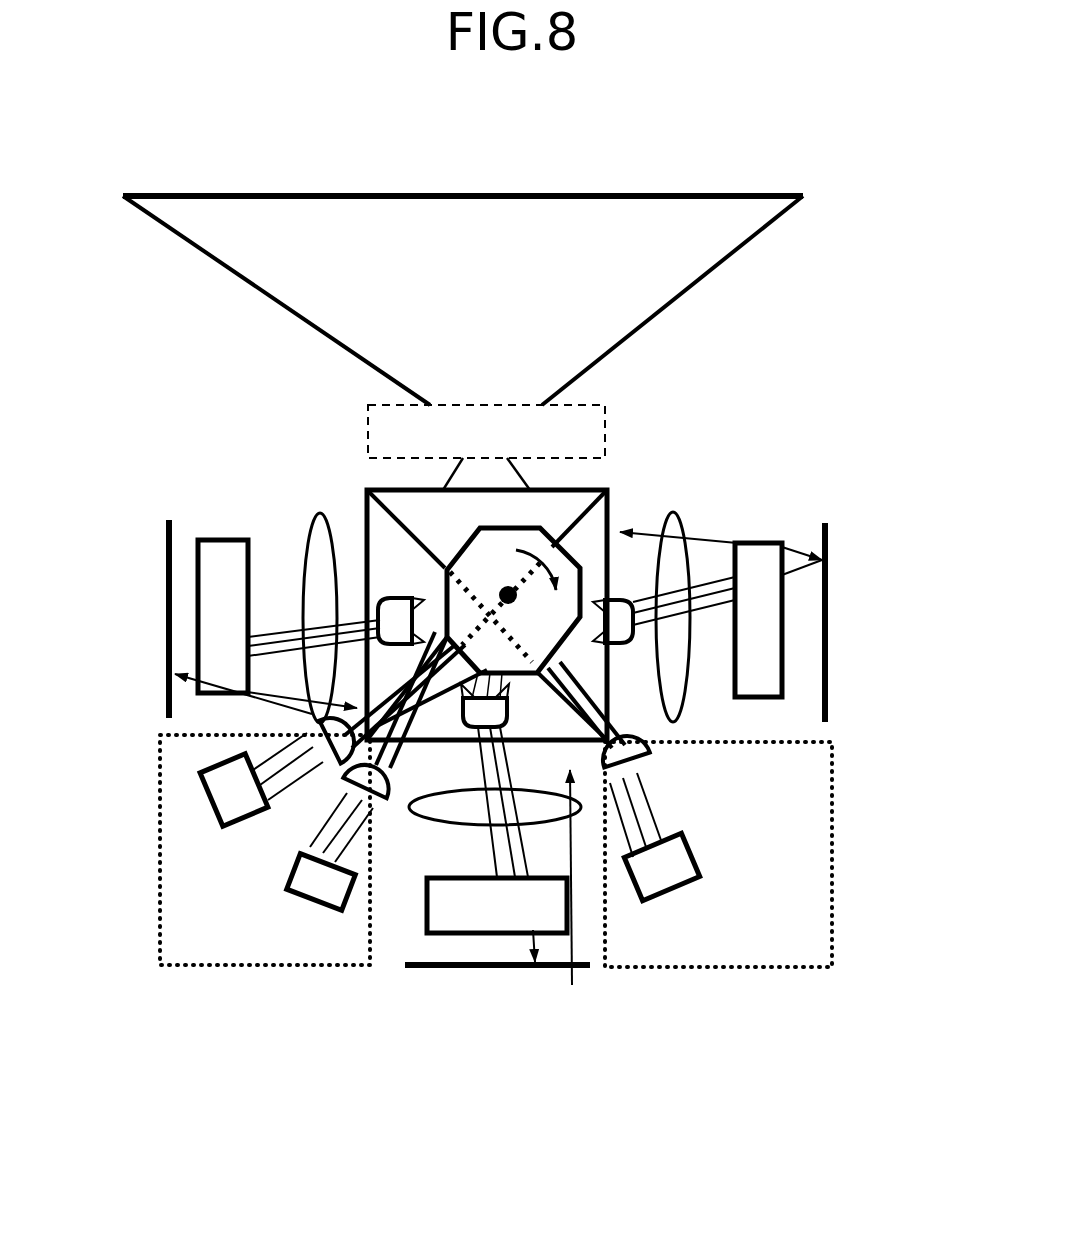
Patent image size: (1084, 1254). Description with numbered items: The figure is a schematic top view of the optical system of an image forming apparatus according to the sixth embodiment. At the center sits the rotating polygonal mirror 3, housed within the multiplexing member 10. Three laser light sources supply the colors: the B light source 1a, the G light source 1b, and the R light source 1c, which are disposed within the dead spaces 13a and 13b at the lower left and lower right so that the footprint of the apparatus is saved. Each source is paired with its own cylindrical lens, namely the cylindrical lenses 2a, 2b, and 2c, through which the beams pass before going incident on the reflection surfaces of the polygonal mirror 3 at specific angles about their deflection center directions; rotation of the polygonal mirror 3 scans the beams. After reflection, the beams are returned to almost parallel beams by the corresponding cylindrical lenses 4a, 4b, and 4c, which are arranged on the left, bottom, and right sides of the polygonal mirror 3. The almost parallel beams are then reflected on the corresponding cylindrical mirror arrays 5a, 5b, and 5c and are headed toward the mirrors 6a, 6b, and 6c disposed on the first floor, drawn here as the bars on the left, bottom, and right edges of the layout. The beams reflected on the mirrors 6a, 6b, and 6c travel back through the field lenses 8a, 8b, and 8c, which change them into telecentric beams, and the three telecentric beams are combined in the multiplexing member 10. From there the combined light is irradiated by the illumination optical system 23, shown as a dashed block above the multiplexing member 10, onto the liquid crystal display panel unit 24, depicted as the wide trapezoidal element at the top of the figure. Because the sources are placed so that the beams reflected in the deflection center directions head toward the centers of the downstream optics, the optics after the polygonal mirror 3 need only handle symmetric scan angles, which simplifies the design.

The liquid crystal display panel unit 24 is at (727, 195).
The illumination optical system 23 is at (478, 405).
The multiplexing member 10 is at (402, 507).
The polygonal mirror 3 is at (560, 545).
The cylindrical lens 4a is at (393, 596).
The cylindrical lens 4b is at (495, 710).
The cylindrical lens 4c is at (633, 632).
The cylindrical mirror array 5a is at (220, 543).
The cylindrical mirror array 5b is at (443, 893).
The cylindrical mirror array 5c is at (762, 542).
The mirror 6a is at (165, 548).
The mirror 6b is at (463, 975).
The mirror 6c is at (830, 533).
The field lens 8a is at (317, 517).
The field lens 8b is at (543, 828).
The field lens 8c is at (680, 528).
The B light source 1a is at (305, 882).
The G light source 1b is at (218, 788).
The R light source 1c is at (680, 860).
The cylindrical lens 2a is at (362, 787).
The cylindrical lens 2b is at (310, 740).
The cylindrical lens 2c is at (652, 760).
The dead space 13a is at (207, 968).
The dead space 13b is at (765, 970).